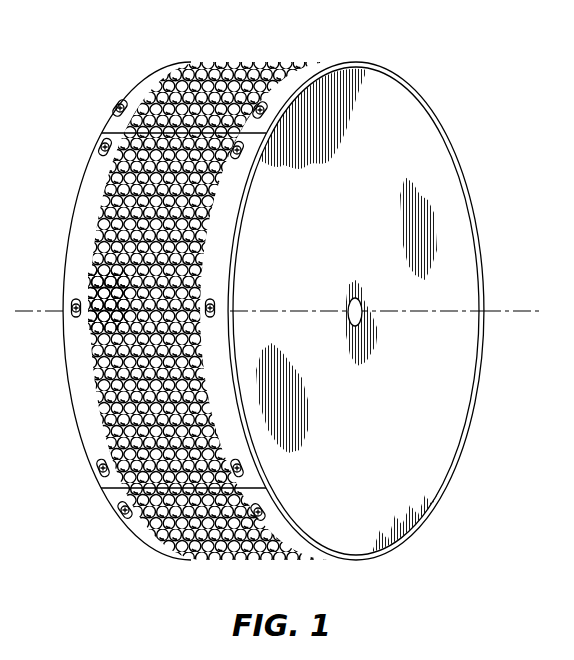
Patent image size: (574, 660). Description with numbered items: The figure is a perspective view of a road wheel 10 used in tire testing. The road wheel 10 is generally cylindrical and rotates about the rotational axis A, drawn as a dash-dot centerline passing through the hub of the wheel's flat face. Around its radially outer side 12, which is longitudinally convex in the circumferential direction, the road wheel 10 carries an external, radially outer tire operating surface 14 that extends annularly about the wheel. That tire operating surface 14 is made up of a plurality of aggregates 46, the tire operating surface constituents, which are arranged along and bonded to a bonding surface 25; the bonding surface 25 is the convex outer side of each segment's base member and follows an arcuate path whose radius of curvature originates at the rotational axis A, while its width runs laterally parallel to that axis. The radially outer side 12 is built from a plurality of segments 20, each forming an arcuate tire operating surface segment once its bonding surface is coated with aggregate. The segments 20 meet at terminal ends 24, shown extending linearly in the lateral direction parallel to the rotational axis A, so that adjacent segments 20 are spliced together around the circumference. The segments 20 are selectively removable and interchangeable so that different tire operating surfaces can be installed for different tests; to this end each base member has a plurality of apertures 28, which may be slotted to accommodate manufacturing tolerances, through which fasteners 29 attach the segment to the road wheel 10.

The road wheel 10 is at (468, 400).
The radially outer side 12 is at (242, 212).
The tire operating surface 14 is at (264, 60).
The segment 20 is at (130, 93).
The terminal end 24 is at (106, 131).
The bonding surface 25 is at (218, 270).
The aperture 28 is at (100, 160).
The fastener 29 is at (103, 147).
The aggregate 46 is at (92, 288).
The rotational axis A is at (516, 311).